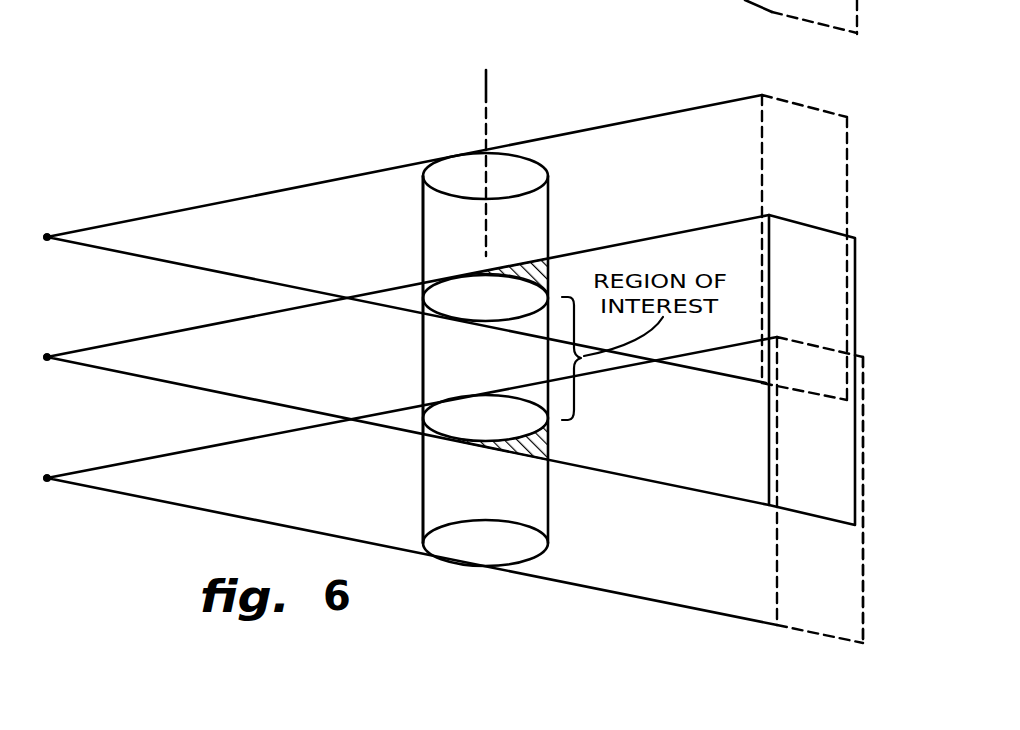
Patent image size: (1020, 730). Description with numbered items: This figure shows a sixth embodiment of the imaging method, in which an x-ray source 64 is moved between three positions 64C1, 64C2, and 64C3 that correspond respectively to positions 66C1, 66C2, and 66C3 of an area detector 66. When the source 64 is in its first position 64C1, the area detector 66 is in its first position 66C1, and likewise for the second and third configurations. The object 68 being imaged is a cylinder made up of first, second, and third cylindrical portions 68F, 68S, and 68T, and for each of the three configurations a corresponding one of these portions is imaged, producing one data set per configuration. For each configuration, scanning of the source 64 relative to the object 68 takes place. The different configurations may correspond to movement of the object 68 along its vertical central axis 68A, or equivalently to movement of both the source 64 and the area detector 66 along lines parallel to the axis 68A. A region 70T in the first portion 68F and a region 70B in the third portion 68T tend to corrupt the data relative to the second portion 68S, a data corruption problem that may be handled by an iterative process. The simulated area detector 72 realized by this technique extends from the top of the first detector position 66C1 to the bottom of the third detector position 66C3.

The x-ray source 64 is at (47, 361).
The first source position 64C1 is at (47, 237).
The second source position 64C2 is at (47, 357).
The third source position 64C3 is at (47, 482).
The area detector 66 is at (740, 321).
The first detector position 66C1 is at (790, 100).
The second detector position 66C2 is at (768, 243).
The third detector position 66C3 is at (768, 437).
The object 68 is at (549, 197).
The vertical central axis 68A is at (488, 98).
The first cylindrical portion 68F is at (422, 216).
The second cylindrical portion 68S is at (423, 353).
The third cylindrical portion 68T is at (423, 485).
The top corrupting region 70T is at (552, 270).
The bottom corrupting region 70B is at (548, 446).
The simulated area detector 72 is at (862, 360).